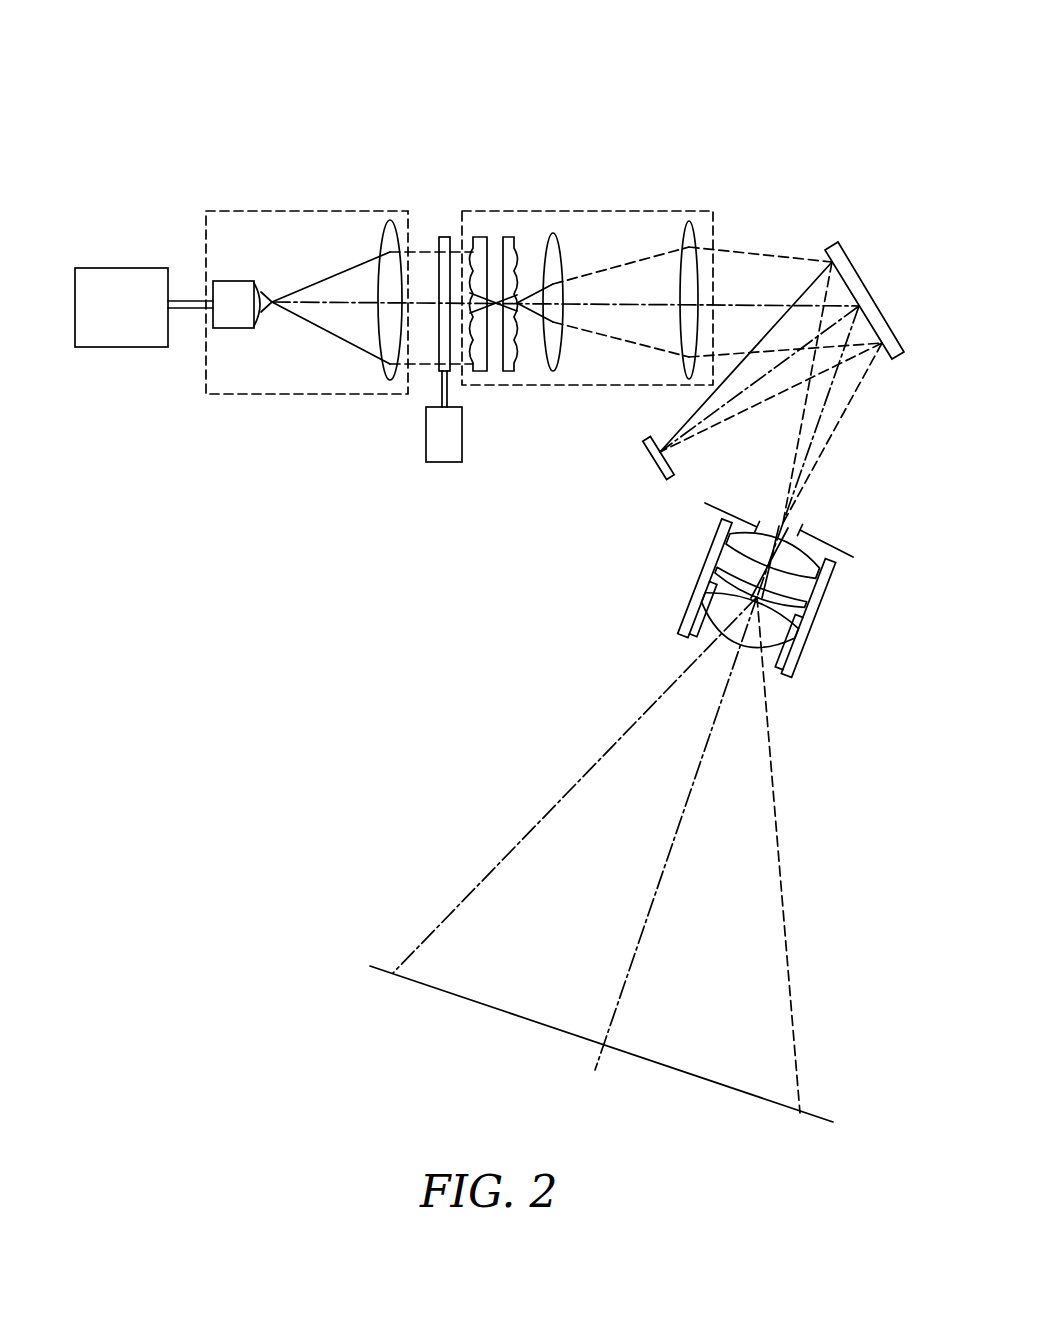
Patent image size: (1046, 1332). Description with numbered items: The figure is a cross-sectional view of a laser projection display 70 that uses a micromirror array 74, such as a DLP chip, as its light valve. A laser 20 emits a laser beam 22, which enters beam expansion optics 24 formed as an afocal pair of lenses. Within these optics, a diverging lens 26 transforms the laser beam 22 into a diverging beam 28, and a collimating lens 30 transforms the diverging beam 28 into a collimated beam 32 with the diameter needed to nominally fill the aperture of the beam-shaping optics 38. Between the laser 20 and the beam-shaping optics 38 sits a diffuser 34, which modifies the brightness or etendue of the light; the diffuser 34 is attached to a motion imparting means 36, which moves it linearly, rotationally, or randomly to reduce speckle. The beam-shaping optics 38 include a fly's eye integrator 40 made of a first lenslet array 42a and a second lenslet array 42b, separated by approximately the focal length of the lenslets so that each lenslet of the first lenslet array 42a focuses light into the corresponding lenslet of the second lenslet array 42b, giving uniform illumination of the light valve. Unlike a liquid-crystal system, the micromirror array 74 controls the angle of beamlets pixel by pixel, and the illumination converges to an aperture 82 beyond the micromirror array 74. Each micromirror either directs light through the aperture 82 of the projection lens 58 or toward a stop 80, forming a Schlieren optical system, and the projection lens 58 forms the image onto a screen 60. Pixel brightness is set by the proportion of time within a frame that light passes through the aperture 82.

The laser 20 is at (125, 268).
The laser beam 22 is at (188, 300).
The beam expansion optics 24 is at (287, 211).
The diverging lens 26 is at (259, 320).
The diverging beam 28 is at (353, 341).
The collimating lens 30 is at (390, 226).
The collimated beam 32 is at (425, 362).
The diffuser 34 is at (445, 237).
The motion imparting means 36 is at (438, 462).
The beam-shaping optics 38 is at (630, 211).
The fly's eye integrator 40 is at (533, 285).
The first lenslet array 42a is at (480, 237).
The second lenslet array 42b is at (519, 246).
The projection lens 58 is at (700, 592).
The screen 60 is at (372, 966).
The laser projection display 70 is at (726, 110).
The micromirror array 74 is at (860, 277).
The stop 80 is at (650, 457).
The aperture 82 is at (822, 543).